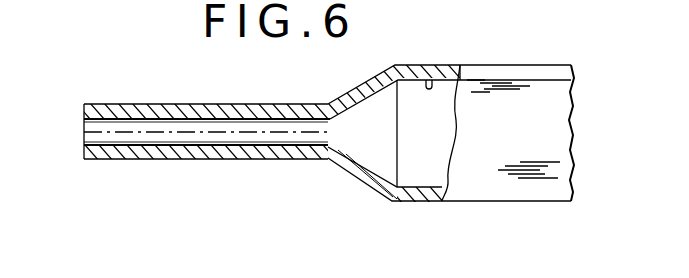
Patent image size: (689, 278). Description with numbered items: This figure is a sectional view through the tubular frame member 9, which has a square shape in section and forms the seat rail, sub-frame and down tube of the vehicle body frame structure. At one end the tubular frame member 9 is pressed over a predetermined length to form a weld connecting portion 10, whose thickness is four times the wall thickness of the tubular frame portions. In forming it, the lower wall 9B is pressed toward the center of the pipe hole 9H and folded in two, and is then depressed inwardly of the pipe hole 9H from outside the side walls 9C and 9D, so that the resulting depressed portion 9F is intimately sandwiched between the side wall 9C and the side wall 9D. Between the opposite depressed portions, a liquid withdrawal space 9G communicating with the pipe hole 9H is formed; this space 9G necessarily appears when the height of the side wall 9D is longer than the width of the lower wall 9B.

The tubular frame member 9 is at (517, 73).
The lower wall 9B is at (352, 152).
The side wall 9C is at (101, 103).
The side wall 9D is at (104, 160).
The depressed portion 9F is at (84, 134).
The liquid withdrawal space 9G is at (207, 120).
The pipe hole 9H is at (429, 78).
The weld connecting portion 10 is at (160, 91).